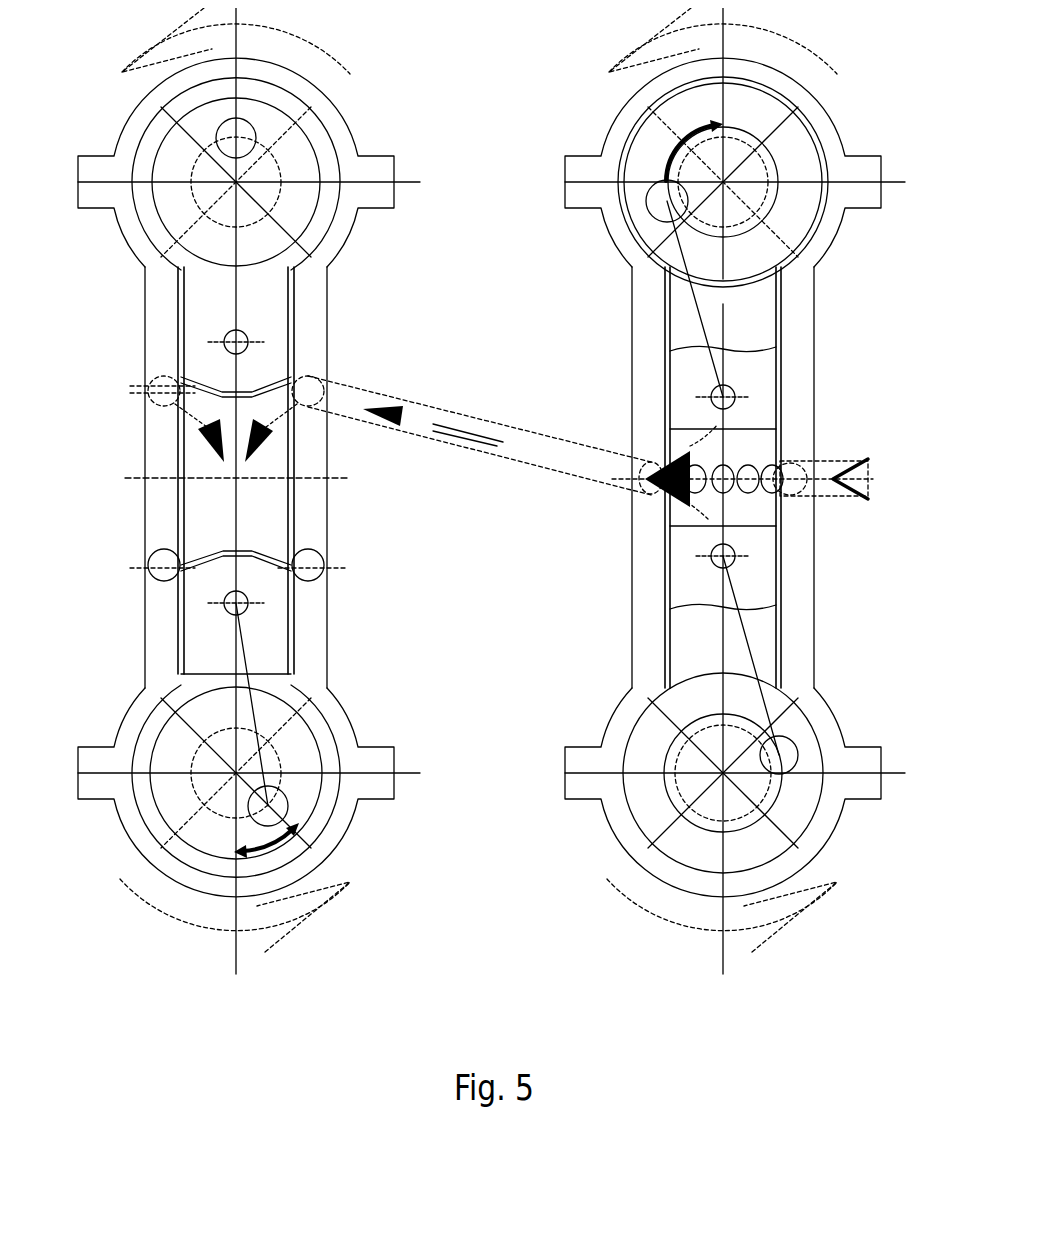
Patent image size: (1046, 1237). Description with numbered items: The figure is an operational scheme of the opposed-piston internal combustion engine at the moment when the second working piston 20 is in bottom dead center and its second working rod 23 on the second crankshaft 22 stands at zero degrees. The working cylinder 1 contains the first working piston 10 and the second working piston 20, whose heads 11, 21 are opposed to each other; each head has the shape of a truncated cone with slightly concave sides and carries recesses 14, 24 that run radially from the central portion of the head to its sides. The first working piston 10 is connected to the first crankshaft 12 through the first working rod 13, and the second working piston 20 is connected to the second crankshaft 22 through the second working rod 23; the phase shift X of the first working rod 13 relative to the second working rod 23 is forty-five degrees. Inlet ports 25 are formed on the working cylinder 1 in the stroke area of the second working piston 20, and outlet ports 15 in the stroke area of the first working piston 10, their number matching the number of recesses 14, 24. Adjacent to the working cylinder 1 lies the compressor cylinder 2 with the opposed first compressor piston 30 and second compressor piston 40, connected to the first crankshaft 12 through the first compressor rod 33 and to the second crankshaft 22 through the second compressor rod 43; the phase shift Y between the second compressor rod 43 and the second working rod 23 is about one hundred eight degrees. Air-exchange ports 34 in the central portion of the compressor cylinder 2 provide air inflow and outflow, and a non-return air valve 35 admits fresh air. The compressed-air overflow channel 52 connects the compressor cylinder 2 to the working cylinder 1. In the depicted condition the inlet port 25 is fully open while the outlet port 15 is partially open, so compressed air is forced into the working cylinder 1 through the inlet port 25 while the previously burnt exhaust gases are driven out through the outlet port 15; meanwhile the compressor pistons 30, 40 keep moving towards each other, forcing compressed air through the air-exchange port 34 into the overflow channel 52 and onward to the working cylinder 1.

The working cylinder 1 is at (162, 481).
The compressor cylinder 2 is at (737, 439).
The first working piston 10 is at (197, 619).
The head of the first working piston 11 is at (229, 543).
The first crankshaft 12 is at (260, 749).
The first working rod 13 is at (249, 704).
The recesses of the first working piston head 14 is at (197, 539).
The outlet ports 15 is at (152, 543).
The second working piston 20 is at (197, 306).
The head of the second working piston 21 is at (199, 373).
The second crankshaft 22 is at (669, 139).
The second working rod 23 is at (224, 231).
The recesses of the second working piston head 24 is at (259, 371).
The inlet ports 25 is at (152, 374).
The first compressor piston 30 is at (675, 554).
The first compressor rod 33 is at (743, 638).
The air-exchange ports 34 is at (748, 461).
The non-return air valve 35 is at (854, 452).
The second compressor piston 40 is at (687, 364).
The second compressor rod 43 is at (689, 309).
The compressed-air overflow channel 52 is at (469, 408).
The phase shift of the first working rod X is at (252, 848).
The phase shift of the second compressor rod Y is at (692, 161).